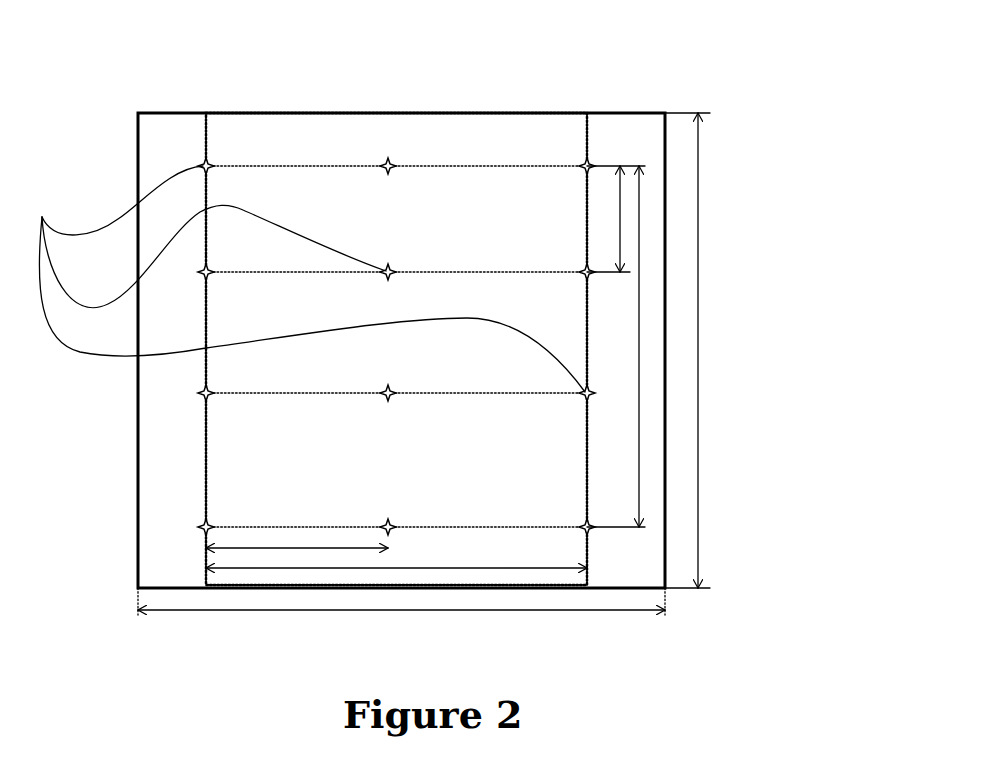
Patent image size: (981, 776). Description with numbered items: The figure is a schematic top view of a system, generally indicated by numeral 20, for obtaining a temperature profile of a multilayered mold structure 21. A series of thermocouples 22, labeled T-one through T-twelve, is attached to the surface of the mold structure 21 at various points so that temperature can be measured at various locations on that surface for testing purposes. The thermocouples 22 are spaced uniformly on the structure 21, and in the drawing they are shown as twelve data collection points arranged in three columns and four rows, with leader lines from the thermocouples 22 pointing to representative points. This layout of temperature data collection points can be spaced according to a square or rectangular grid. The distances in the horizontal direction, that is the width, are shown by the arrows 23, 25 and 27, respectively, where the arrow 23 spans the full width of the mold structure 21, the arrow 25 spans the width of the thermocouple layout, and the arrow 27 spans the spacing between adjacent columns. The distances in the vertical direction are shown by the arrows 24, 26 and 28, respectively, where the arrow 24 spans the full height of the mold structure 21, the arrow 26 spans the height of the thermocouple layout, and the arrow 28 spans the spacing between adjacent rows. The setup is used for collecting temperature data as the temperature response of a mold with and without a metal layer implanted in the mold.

The system 20 is at (426, 305).
The mold structure 21 is at (205, 113).
The thermocouples 22 is at (42, 217).
The arrow 23 is at (240, 610).
The arrow 24 is at (699, 222).
The arrow 25 is at (423, 568).
The arrow 26 is at (640, 322).
The arrow 27 is at (354, 548).
The arrow 28 is at (620, 187).